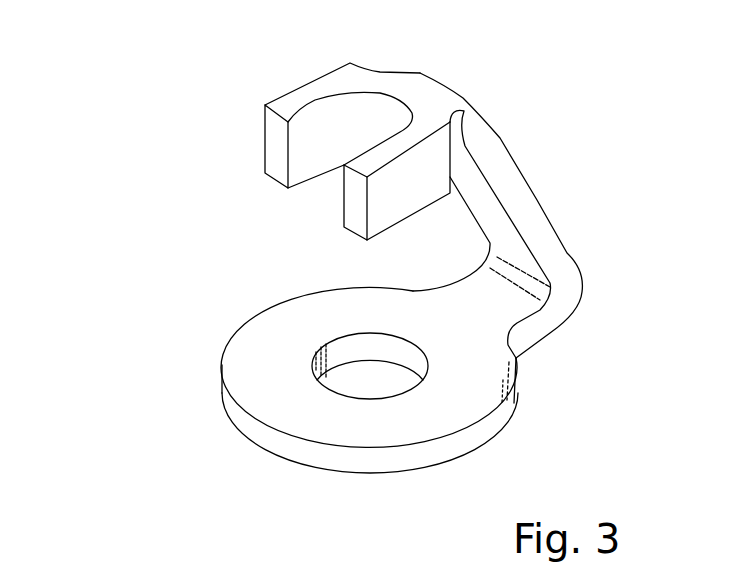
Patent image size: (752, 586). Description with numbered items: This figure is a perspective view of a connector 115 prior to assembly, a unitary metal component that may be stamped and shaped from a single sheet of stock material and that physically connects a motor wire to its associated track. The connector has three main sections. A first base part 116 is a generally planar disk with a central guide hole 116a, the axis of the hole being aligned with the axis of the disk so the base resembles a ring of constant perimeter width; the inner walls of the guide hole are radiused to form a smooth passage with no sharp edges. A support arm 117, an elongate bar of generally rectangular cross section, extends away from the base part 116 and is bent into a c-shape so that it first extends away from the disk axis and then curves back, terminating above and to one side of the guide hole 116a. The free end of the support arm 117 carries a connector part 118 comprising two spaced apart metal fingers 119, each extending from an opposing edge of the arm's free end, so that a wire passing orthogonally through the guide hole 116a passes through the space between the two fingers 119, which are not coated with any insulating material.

The connector 115 is at (208, 318).
The base part 116 is at (513, 393).
The guide hole 116a is at (349, 373).
The support arm 117 is at (557, 253).
The connector part 118 is at (463, 94).
The fingers 119 is at (293, 103).